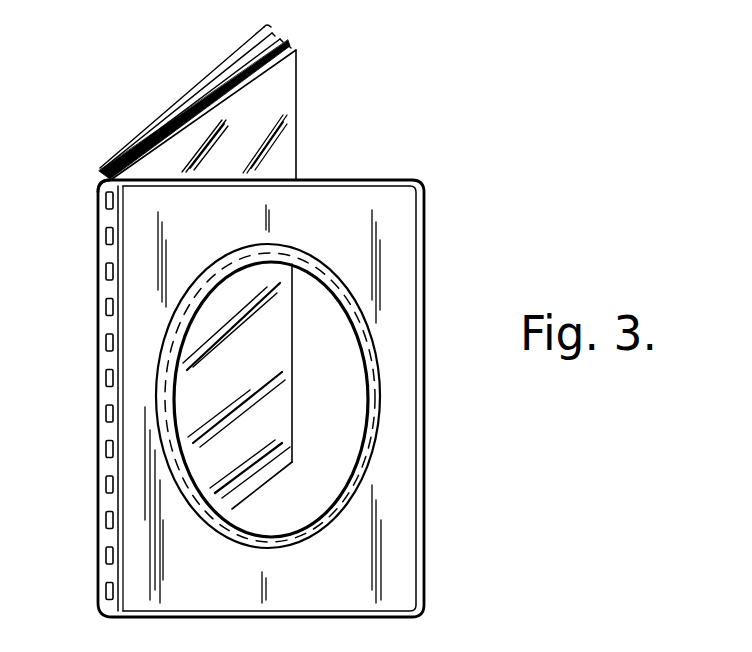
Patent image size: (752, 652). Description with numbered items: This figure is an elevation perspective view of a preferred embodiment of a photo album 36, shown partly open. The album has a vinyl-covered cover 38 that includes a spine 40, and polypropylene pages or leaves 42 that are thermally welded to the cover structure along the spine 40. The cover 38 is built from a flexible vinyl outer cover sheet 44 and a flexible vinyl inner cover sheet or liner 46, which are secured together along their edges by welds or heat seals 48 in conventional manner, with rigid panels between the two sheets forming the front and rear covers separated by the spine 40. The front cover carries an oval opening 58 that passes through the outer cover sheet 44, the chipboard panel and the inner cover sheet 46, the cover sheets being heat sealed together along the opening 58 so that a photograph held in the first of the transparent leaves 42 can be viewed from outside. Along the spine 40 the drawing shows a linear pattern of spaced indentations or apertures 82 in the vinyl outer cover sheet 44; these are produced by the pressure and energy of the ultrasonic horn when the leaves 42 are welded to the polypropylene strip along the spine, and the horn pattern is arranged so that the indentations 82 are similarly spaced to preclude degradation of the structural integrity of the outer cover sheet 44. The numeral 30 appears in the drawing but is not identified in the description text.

The photo album 30 is at (210, 73).
The photo album 36 is at (344, 121).
The cover 38 is at (427, 208).
The spine 40 is at (99, 443).
The pages or leaves 42 is at (277, 40).
The outer cover sheet 44 is at (326, 581).
The inner cover sheet or liner 46 is at (264, 30).
The welds or heat seals 48 is at (148, 130).
The oval opening 58 is at (193, 320).
The indentations or apertures 82 is at (102, 345).